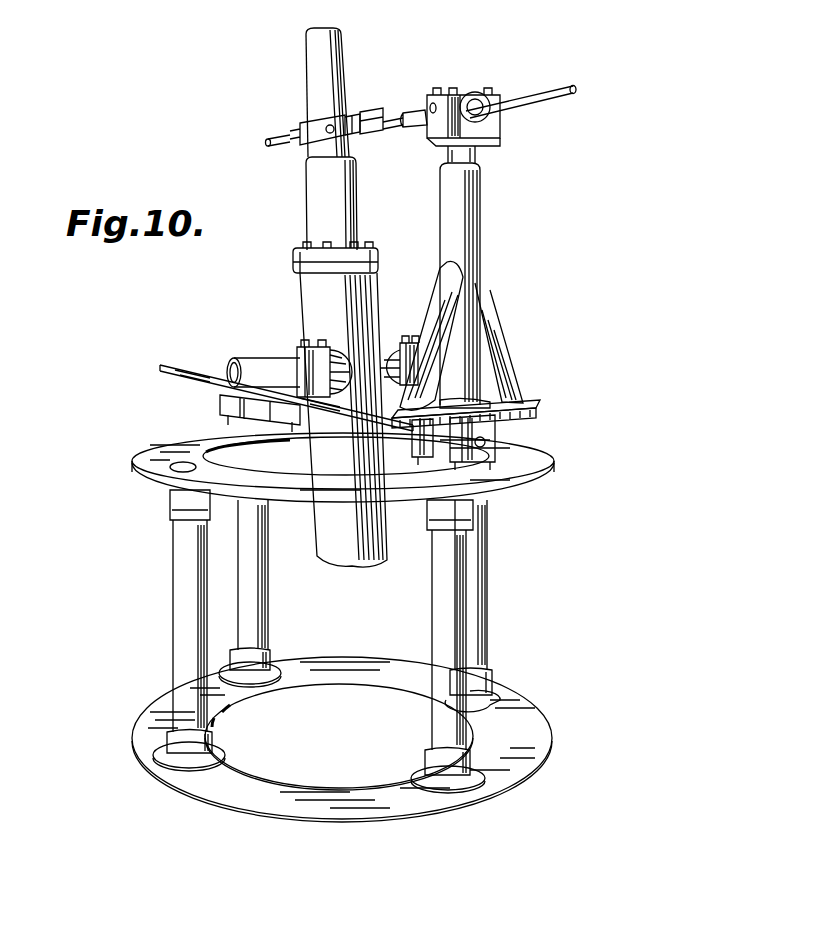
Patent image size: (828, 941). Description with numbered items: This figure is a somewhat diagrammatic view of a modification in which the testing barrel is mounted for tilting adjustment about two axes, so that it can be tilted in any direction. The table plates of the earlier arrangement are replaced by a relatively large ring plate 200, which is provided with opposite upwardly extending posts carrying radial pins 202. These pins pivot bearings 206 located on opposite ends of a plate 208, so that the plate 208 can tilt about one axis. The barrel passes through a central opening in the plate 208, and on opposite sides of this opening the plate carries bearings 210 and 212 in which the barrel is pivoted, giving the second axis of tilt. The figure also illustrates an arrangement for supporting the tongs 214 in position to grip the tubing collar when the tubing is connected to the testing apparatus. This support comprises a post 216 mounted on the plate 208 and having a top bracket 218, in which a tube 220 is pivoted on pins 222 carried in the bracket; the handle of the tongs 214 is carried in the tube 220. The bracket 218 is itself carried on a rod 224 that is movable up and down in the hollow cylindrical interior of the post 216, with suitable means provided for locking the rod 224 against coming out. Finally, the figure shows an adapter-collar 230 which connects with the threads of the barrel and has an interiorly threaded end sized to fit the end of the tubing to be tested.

The ring plate 200 is at (513, 475).
The radial pins 202 is at (487, 442).
The bearings 206 is at (492, 418).
The plate 208 is at (180, 365).
The bearing 210 is at (262, 350).
The bearing 212 is at (425, 312).
The tongs 214 is at (293, 130).
The post 216 is at (462, 280).
The top bracket 218 is at (496, 126).
The tube 220 is at (508, 70).
The pins 222 is at (432, 103).
The rod 224 is at (472, 152).
The adapter-collar 230 is at (304, 185).